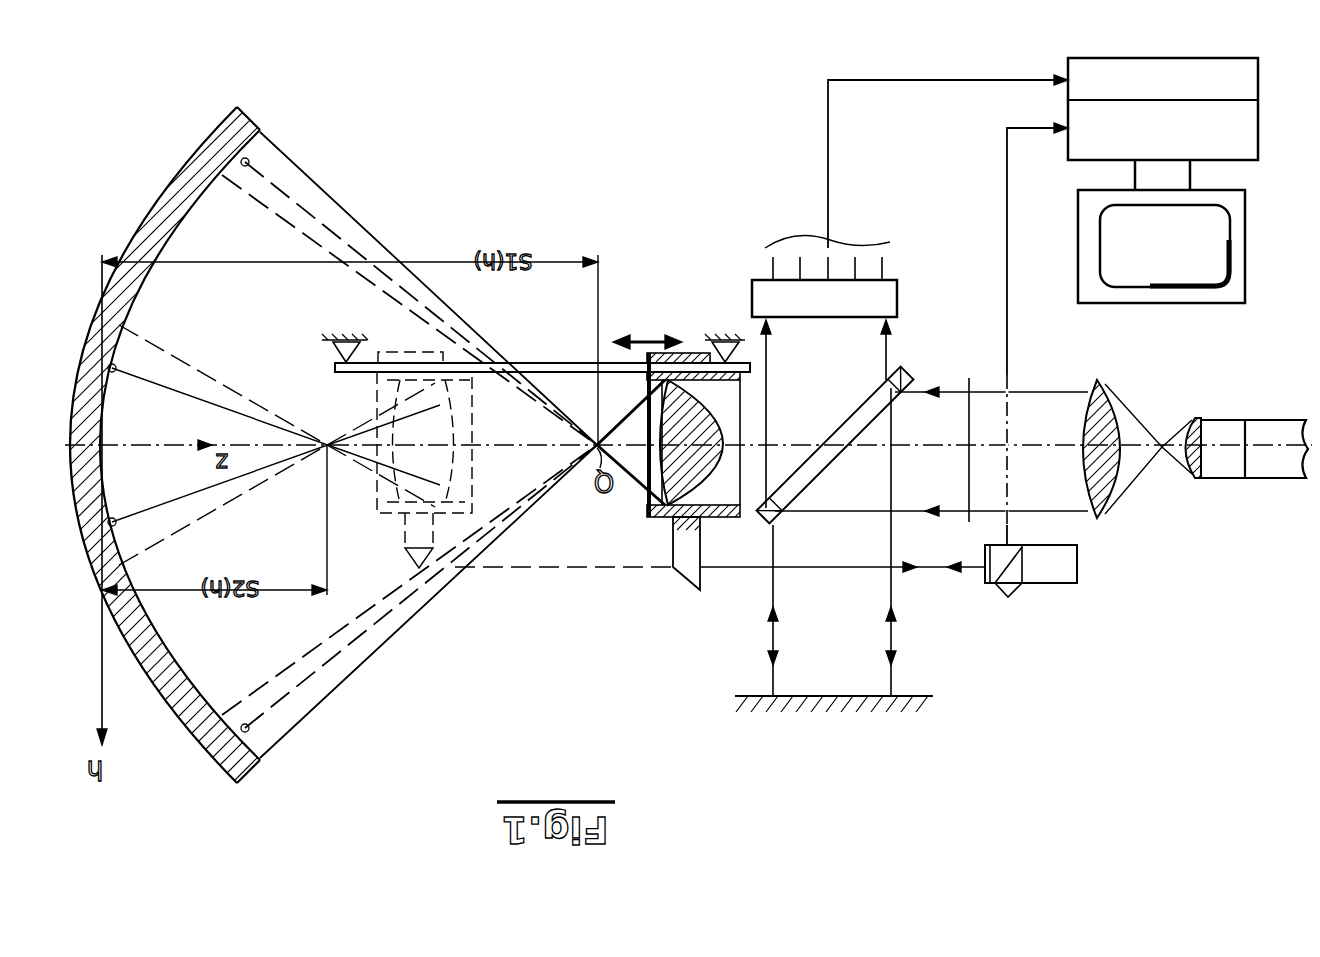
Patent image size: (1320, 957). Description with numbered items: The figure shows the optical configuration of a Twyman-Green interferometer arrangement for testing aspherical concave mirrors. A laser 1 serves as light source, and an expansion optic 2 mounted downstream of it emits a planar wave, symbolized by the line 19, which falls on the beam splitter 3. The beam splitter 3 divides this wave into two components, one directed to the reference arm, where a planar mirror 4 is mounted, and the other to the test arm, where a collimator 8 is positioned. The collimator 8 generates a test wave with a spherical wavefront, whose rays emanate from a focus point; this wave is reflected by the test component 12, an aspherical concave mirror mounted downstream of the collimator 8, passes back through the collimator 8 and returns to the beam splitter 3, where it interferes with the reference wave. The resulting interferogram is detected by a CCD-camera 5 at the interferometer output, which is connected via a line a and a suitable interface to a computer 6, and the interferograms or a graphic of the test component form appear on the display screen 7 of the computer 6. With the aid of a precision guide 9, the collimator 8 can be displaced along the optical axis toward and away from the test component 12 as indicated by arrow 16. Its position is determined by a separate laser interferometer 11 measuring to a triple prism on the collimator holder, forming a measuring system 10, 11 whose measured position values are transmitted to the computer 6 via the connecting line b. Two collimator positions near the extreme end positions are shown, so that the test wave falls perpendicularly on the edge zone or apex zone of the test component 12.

The laser 1 is at (1272, 472).
The expansion optic 2 is at (1156, 492).
The beam splitter 3 is at (832, 462).
The planar mirror 4 is at (750, 696).
The CCD-camera 5 is at (893, 300).
The computer 6 is at (560, 362).
The display screen 7 is at (1105, 235).
The collimator 8 is at (660, 520).
The precision guide 9 is at (1080, 140).
The laser interferometer (measuring system) 10 is at (688, 585).
The laser interferometer 11 is at (1042, 572).
The test component 12 is at (187, 657).
The arrow 16 is at (642, 342).
The line symbolizing the planar wave 19 is at (972, 382).
The line a is at (828, 148).
The connecting line b is at (1007, 200).